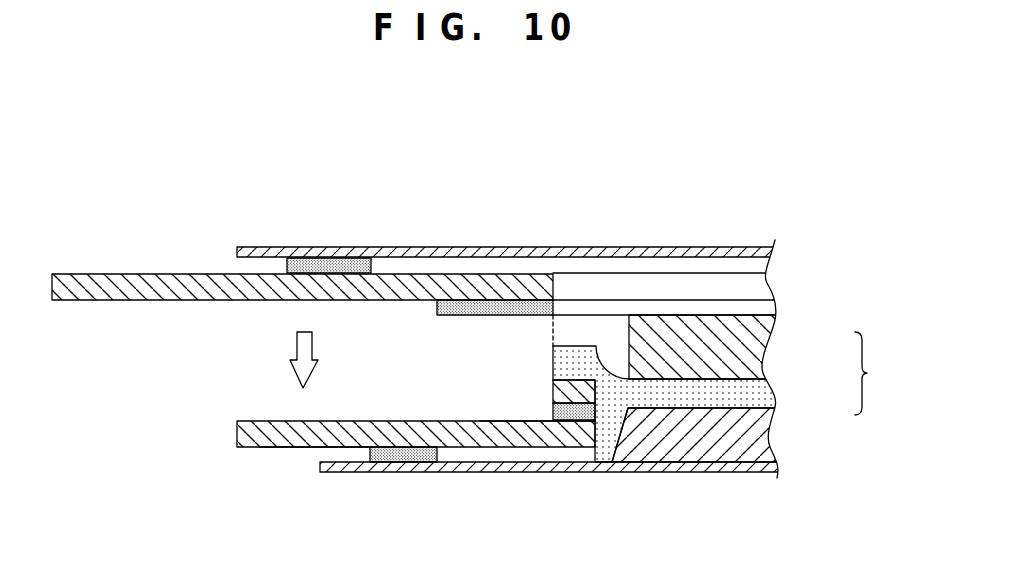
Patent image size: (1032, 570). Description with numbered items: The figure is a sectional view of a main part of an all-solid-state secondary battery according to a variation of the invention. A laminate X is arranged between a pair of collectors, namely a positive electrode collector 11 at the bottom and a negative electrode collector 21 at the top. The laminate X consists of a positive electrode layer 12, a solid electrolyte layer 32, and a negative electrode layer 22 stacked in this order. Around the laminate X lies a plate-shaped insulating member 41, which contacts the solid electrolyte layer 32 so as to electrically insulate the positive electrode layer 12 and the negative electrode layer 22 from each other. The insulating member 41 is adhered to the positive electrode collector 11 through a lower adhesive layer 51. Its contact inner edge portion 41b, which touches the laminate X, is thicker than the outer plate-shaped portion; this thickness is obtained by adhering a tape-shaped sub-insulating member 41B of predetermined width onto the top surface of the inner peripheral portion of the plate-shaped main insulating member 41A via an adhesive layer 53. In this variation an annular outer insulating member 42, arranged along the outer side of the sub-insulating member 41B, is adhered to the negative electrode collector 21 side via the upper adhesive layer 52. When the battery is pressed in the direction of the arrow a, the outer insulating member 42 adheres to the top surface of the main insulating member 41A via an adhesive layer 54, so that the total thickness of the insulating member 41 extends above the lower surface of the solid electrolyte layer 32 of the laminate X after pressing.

The negative electrode collector 21 is at (694, 248).
The annular outer insulating member 42 is at (192, 301).
The upper adhesive layer 52 is at (371, 263).
The adhesive layer 54 is at (440, 308).
The negative electrode layer 22 is at (760, 356).
The solid electrolyte layer 32 is at (750, 392).
The positive electrode layer 12 is at (748, 430).
The positive electrode collector 11 is at (694, 472).
The plate-shaped insulating member 41 is at (247, 449).
The tape-shaped sub-insulating member 41B is at (553, 394).
The contact inner edge portion 41b is at (535, 415).
The plate-shaped main insulating member 41A is at (315, 486).
The adhesive layer 53 is at (553, 412).
The lower adhesive layer 51 is at (437, 455).
The arrow a is at (303, 346).
The laminate X is at (874, 373).